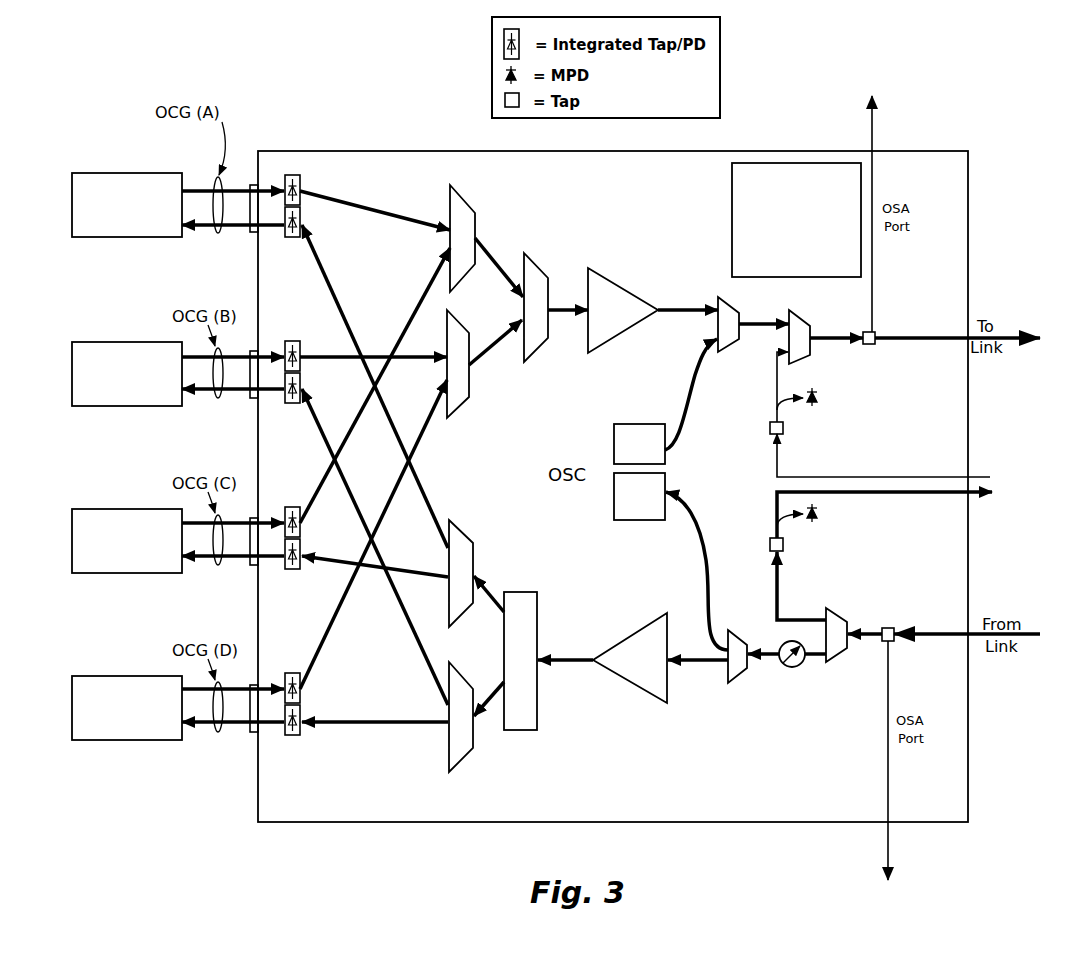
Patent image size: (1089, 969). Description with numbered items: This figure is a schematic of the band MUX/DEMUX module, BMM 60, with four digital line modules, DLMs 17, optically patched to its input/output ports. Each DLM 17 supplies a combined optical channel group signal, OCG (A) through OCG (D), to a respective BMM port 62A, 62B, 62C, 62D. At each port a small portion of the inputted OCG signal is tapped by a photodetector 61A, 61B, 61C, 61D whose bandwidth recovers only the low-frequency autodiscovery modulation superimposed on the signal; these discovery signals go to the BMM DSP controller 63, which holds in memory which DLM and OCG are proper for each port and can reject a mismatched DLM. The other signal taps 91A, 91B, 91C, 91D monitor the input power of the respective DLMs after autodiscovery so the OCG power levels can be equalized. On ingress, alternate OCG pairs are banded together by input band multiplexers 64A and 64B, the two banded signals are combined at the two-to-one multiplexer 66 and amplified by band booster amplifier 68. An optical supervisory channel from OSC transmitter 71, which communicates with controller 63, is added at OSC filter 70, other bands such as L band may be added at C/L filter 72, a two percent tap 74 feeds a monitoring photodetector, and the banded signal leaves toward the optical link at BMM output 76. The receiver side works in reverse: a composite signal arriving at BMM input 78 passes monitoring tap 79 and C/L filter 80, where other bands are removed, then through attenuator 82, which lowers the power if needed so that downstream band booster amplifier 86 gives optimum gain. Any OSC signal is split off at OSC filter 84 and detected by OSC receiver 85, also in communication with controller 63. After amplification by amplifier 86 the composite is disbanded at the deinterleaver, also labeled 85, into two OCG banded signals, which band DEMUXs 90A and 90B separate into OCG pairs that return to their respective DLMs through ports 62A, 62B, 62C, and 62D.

The digital line module 17 is at (127, 442).
The band MUX/DEMUX module 60 is at (613, 486).
The photodetector 61A is at (292, 174).
The photodetector 61B is at (292, 340).
The photodetector 61C is at (292, 506).
The photodetector 61D is at (292, 672).
The signal tap 91A is at (293, 238).
The signal tap 91B is at (293, 404).
The signal tap 91C is at (293, 570).
The signal tap 91D is at (293, 736).
The BMM input/output port 62A is at (251, 235).
The BMM input/output port 62B is at (251, 401).
The BMM input/output port 62C is at (251, 568).
The BMM input/output port 62D is at (251, 735).
The BMM DSP controller 63 is at (796, 220).
The input band multiplexer 64A is at (509, 230).
The input band multiplexer 64B is at (478, 395).
The 2:1 multiplexer 66 is at (538, 343).
The band booster amplifier 68 is at (625, 279).
The OSC filter 70 is at (735, 370).
The OSC transmitter 71 is at (643, 423).
The C/L filter 72 is at (836, 351).
The 2% tap 74 is at (893, 311).
The BMM output 76 is at (945, 332).
The BMM input 78 is at (946, 632).
The monitoring tap 79 is at (882, 644).
The C/L filter 80 is at (856, 604).
The attenuator 82 is at (798, 668).
The OSC filter 84 is at (747, 710).
The OSC receiver 85 is at (640, 522).
The band booster amplifier 86 is at (630, 688).
The band DEMUX 90A is at (517, 567).
The band DEMUX 90B is at (519, 733).